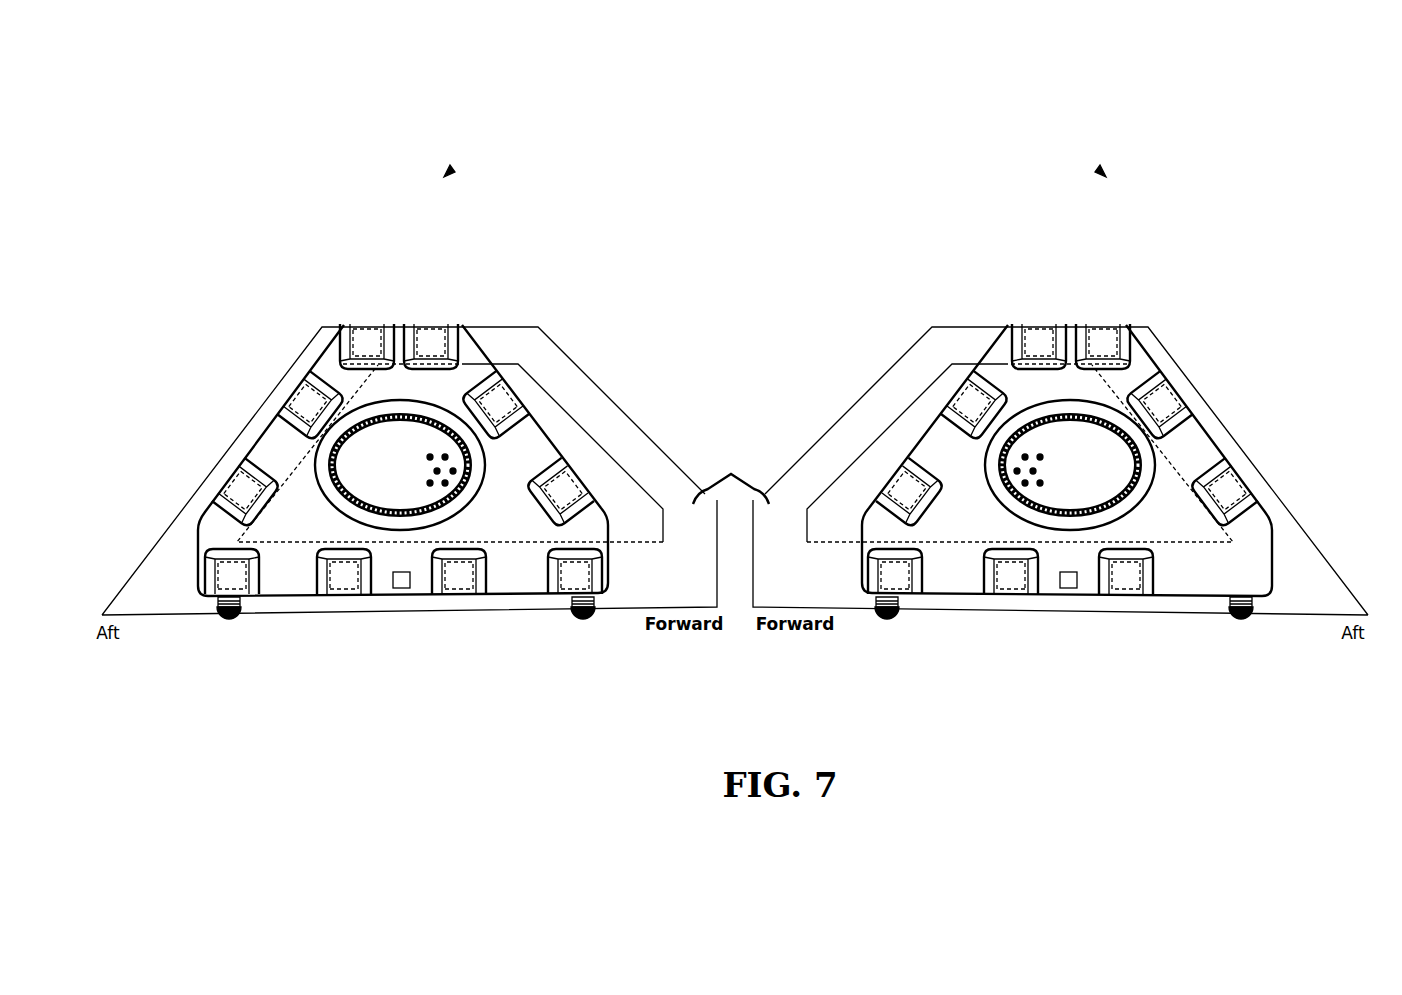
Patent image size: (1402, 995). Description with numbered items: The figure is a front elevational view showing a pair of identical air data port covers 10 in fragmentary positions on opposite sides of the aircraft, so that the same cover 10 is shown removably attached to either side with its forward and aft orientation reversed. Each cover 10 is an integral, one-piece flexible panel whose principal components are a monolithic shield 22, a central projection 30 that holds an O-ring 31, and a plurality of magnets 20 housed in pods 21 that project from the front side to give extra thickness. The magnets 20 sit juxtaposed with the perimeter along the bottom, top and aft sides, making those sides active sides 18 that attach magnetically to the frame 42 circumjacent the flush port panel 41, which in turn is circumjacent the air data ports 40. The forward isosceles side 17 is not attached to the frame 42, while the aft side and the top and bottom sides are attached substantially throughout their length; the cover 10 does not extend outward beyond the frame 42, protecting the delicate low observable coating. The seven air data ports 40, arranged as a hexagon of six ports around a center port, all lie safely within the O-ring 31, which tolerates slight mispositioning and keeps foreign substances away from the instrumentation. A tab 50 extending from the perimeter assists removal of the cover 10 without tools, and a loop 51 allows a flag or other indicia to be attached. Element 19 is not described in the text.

The air data port cover 10 is at (449, 170).
The isosceles side 17 is at (580, 447).
The active side 18 is at (437, 325).
The housing side wall 19 is at (540, 437).
The magnet 20 is at (432, 347).
The pod 21 is at (250, 465).
The shield 22 is at (469, 378).
The central projection 30 is at (355, 407).
The O-ring 31 is at (333, 500).
The air data port 40 is at (436, 488).
The flush port panel 41 is at (625, 438).
The frame 42 is at (1362, 498).
The tab 50 is at (229, 620).
The loop 51 is at (402, 590).